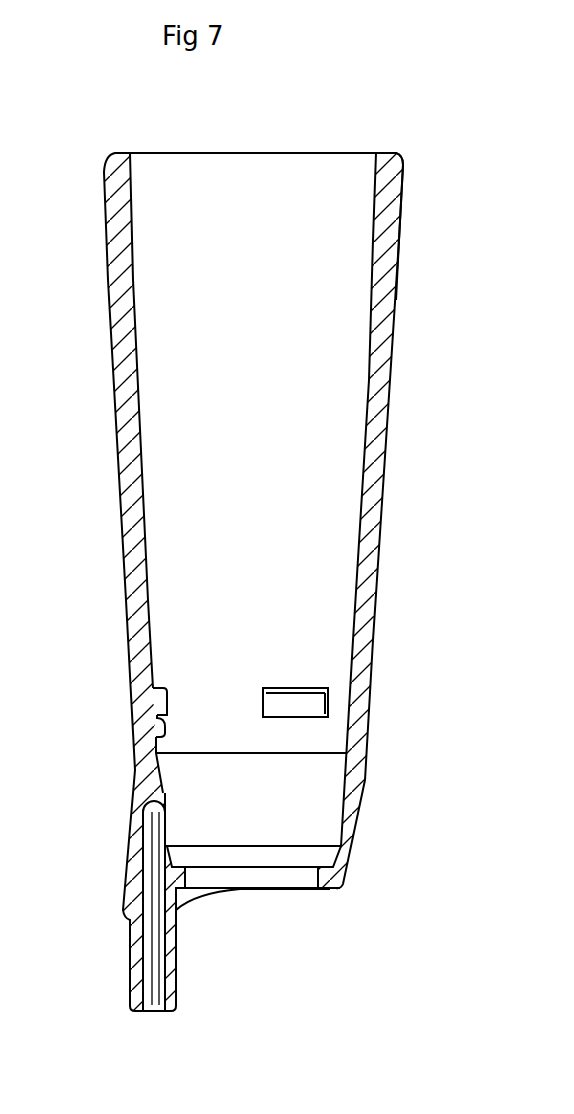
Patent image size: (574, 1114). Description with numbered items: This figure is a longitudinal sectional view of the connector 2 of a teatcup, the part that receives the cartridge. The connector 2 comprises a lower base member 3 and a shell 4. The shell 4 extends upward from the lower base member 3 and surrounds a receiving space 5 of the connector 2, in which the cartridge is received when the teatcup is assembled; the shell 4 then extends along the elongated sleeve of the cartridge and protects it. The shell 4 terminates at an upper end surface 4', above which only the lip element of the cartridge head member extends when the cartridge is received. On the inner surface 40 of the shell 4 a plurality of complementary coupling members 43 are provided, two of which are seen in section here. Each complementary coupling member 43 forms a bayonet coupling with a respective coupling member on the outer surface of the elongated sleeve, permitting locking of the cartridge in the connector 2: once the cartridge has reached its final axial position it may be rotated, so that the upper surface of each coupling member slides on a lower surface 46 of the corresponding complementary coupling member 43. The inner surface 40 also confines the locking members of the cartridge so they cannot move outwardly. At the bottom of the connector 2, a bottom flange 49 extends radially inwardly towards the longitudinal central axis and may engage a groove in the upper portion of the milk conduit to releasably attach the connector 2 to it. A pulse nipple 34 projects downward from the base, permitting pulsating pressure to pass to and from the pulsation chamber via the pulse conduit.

The connector 2 is at (96, 168).
The upper end surface of the shell 4' is at (430, 138).
The inner surface of the shell 40 is at (376, 272).
The shell 4 is at (381, 522).
The receiving space 5 is at (263, 391).
The complementary coupling members 43 is at (137, 697).
The lower surface of the complementary coupling member 46 is at (160, 735).
The lower base member 3 is at (350, 838).
The bottom flange 49 is at (318, 887).
The pulse nipple 34 is at (136, 981).